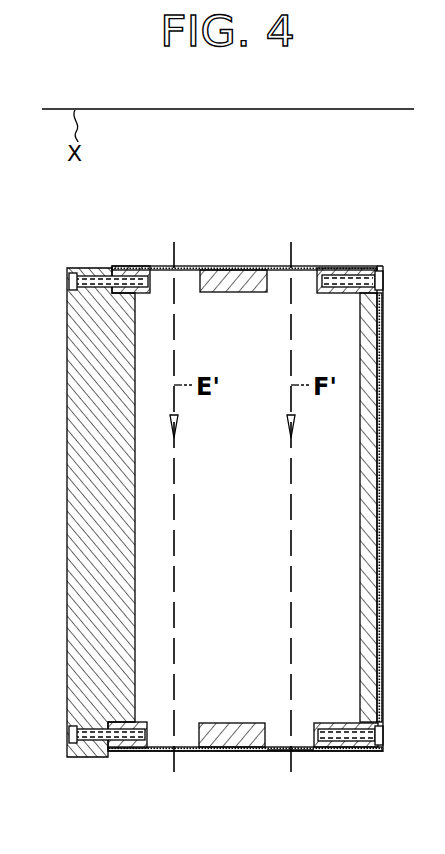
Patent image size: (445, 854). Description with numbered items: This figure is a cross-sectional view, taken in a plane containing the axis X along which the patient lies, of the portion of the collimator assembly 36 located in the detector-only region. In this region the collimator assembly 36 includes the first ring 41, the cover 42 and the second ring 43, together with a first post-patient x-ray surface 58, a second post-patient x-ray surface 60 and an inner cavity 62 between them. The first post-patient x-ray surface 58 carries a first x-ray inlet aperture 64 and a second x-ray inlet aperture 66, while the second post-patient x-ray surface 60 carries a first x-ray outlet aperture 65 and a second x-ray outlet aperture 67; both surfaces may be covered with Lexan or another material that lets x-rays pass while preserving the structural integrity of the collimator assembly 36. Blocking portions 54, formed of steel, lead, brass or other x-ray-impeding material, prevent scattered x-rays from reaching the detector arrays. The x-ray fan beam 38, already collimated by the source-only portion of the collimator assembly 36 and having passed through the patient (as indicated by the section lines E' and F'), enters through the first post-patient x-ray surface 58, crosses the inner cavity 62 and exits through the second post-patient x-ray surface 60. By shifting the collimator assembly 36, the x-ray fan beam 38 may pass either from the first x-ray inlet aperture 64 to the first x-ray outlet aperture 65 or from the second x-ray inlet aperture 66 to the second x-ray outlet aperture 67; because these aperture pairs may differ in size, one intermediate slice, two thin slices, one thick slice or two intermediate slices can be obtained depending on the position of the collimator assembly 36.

The collimator assembly 36 is at (47, 423).
The x-ray fan beam 38 is at (290, 597).
The first ring 41 is at (383, 547).
The cover 42 is at (380, 524).
The second ring 43 is at (80, 596).
The blocking portions 54 is at (244, 282).
The first post-patient x-ray surface 58 is at (218, 266).
The second post-patient x-ray surface 60 is at (337, 752).
The inner cavity 62 is at (320, 449).
The first x-ray inlet aperture 64 is at (165, 267).
The first x-ray outlet aperture 65 is at (158, 752).
The second x-ray inlet aperture 66 is at (308, 267).
The second x-ray outlet aperture 67 is at (297, 753).